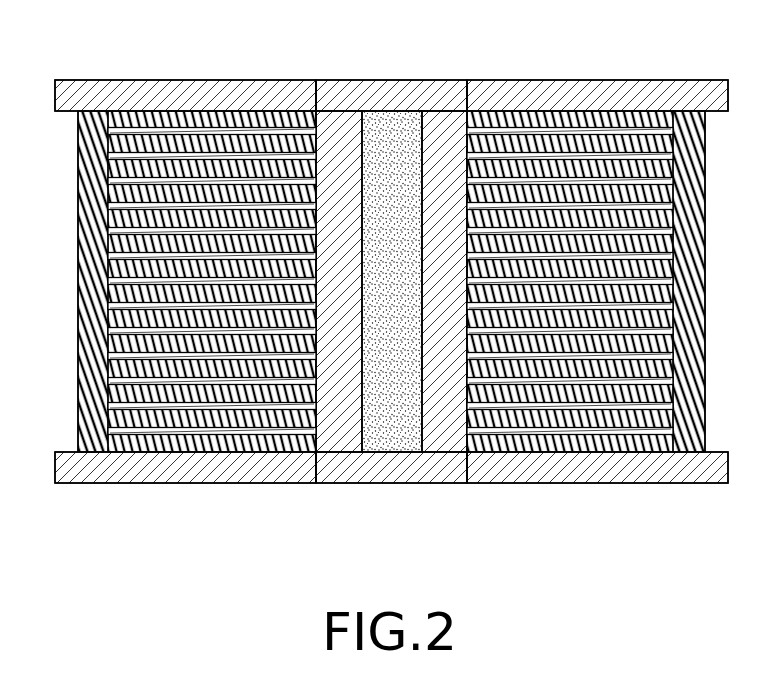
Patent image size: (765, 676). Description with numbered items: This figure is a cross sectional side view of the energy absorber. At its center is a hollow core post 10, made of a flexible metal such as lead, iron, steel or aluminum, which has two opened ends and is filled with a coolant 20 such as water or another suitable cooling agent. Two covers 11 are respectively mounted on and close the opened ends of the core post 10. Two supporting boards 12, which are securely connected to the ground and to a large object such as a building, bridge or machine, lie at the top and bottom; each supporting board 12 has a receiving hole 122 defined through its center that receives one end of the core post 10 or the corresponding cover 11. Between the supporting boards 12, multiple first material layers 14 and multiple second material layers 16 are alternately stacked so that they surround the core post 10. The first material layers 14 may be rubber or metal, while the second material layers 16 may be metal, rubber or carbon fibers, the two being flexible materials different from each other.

The core post 10 is at (367, 284).
The cover 11 is at (427, 90).
The supporting board 12 is at (650, 90).
The receiving hole 122 is at (467, 93).
The first material layer 14 is at (100, 320).
The second material layer 16 is at (108, 232).
The coolant 20 is at (378, 125).